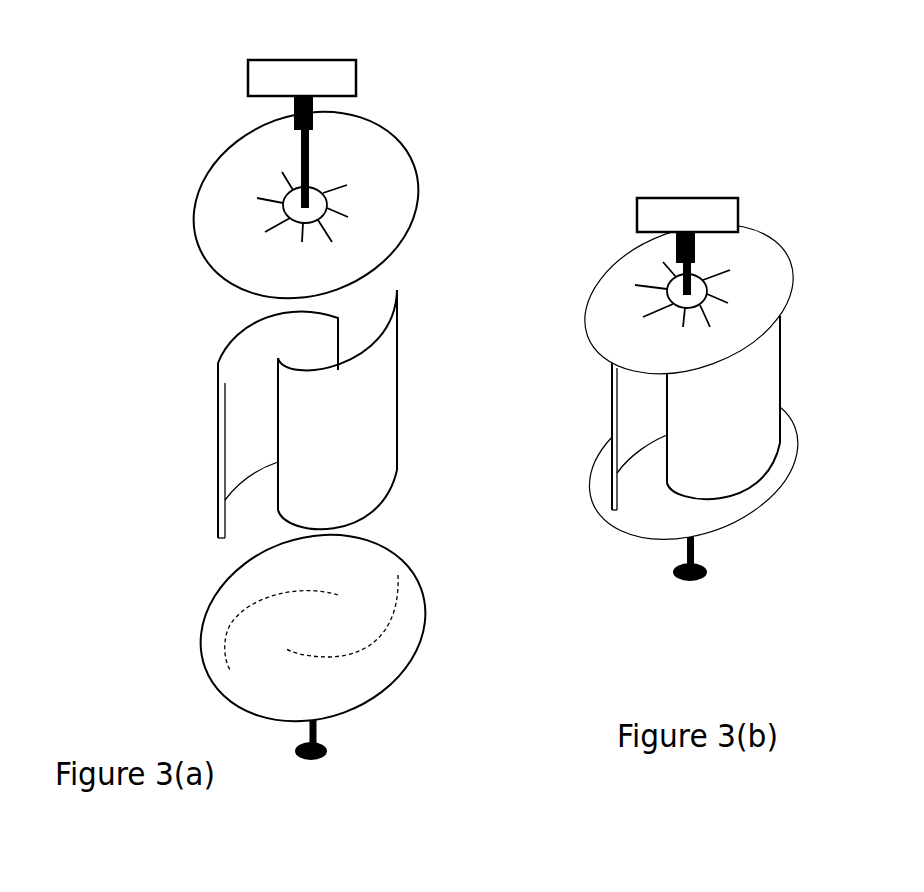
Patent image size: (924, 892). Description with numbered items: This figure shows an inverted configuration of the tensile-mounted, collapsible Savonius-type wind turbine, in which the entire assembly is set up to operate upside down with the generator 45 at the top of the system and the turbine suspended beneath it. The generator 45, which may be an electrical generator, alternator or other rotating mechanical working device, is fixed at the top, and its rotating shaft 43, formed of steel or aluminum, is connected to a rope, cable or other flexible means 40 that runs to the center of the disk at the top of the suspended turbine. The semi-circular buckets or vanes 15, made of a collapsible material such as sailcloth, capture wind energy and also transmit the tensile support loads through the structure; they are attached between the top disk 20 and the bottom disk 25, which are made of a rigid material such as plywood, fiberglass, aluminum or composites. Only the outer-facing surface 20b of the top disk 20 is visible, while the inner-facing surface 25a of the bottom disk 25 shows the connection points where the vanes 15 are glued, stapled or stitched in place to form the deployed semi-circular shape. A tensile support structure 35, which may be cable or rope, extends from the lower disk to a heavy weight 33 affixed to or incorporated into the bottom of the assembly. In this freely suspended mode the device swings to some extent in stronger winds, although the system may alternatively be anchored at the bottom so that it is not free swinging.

In FIG. 3A, the vanes 15 is at (403, 477).
In FIG. 3B, the vanes 15 is at (610, 420).
In FIG. 3A, the top disk 20 is at (420, 180).
In FIG. 3B, the top disk 20 is at (623, 242).
In FIG. 3A, the outer-facing surface 20b is at (380, 165).
In FIG. 3A, the bottom disk 25 is at (428, 608).
In FIG. 3B, the bottom disk 25 is at (603, 530).
In FIG. 3A, the inner-facing surface 25a is at (235, 600).
In FIG. 3A, the heavy weight 33 is at (328, 753).
In FIG. 3B, the heavy weight 33 is at (705, 577).
In FIG. 3A, the upper tensile support structure 35 is at (320, 730).
In FIG. 3B, the upper tensile support structure 35 is at (695, 549).
In FIG. 3A, the flexible means 40 is at (298, 148).
In FIG. 3B, the flexible means 40 is at (690, 283).
In FIG. 3A, the rotating shaft 43 is at (313, 103).
In FIG. 3B, the rotating shaft 43 is at (697, 246).
In FIG. 3A, the generator 45 is at (247, 74).
In FIG. 3B, the generator 45 is at (695, 187).